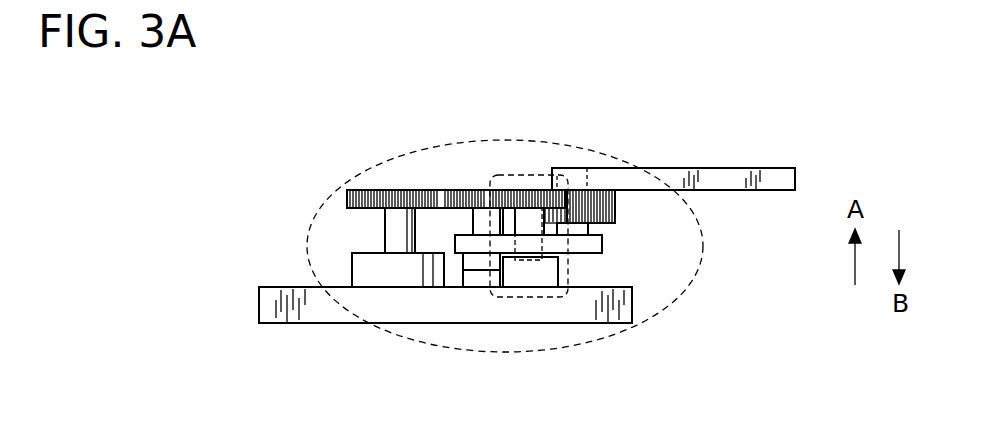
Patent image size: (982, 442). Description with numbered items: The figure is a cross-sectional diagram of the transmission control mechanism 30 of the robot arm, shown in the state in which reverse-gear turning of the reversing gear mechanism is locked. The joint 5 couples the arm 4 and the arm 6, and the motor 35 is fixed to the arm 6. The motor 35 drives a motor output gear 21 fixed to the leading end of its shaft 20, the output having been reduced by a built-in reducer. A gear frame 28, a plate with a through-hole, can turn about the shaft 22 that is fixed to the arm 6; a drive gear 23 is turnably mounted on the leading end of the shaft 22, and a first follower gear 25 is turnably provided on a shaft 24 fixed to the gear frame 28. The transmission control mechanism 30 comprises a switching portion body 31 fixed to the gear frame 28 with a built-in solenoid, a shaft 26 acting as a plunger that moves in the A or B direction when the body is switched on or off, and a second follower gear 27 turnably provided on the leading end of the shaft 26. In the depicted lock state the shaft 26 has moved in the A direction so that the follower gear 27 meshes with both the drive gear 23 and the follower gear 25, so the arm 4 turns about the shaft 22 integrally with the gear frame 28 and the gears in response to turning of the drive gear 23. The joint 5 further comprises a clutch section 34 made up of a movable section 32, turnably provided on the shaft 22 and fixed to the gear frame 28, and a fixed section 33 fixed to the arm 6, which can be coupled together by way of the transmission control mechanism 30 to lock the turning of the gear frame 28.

The arm 4 is at (712, 168).
The joint 5 is at (600, 147).
The arm 6 is at (272, 287).
The shaft 20 is at (393, 233).
The motor output gear 21 is at (370, 190).
The shaft 22 is at (437, 193).
The drive gear 23 is at (483, 220).
The shaft 24 is at (582, 227).
The follower gear 25 is at (615, 205).
The shaft 26 is at (525, 223).
The follower gear 27 is at (503, 190).
The gear frame 28 is at (603, 245).
The transmission control mechanism 30 is at (563, 254).
The switching portion body 31 is at (560, 267).
The movable section 32 is at (462, 260).
The fixed section 33 is at (460, 277).
The clutch section 34 is at (369, 336).
The motor 35 is at (358, 273).